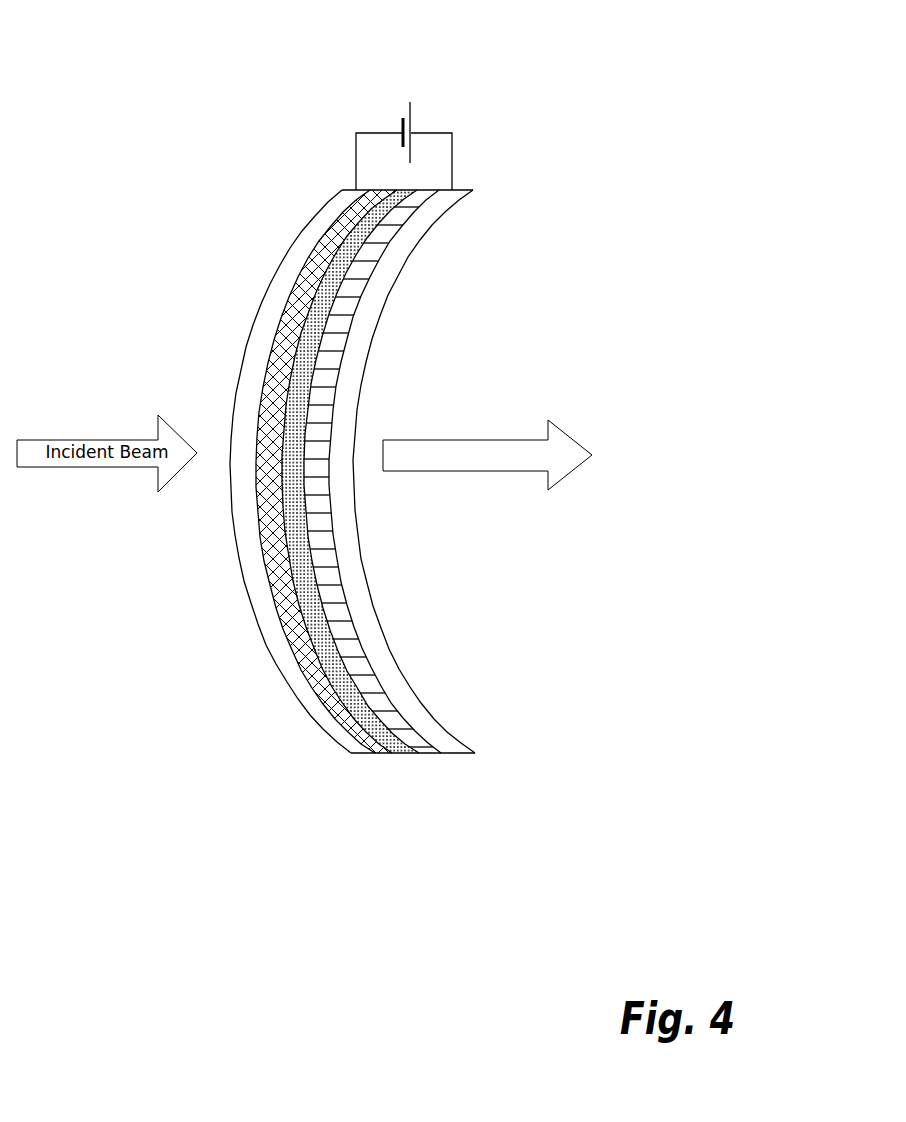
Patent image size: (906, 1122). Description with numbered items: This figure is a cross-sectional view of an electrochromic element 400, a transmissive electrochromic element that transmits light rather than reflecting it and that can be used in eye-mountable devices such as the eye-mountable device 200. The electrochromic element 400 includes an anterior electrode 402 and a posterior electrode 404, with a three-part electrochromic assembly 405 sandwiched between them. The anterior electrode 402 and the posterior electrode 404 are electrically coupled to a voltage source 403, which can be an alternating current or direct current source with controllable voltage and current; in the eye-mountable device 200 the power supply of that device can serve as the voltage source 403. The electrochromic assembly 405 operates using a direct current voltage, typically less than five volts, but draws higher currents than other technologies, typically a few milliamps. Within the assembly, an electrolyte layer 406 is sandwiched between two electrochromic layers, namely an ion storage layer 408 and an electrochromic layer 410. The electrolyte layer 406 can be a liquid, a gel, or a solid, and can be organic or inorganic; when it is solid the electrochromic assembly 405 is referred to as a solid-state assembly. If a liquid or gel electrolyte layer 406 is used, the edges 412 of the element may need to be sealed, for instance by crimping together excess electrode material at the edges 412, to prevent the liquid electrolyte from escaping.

The electrochromic element 400 is at (721, 204).
The anterior electrode 402 is at (347, 200).
The voltage source 403 is at (400, 88).
The posterior electrode 404 is at (413, 243).
The three-part electrochromic assembly 405 is at (360, 612).
The electrolyte layer 406 is at (288, 495).
The ion storage layer 408 is at (283, 316).
The electrochromic layer 410 is at (385, 703).
The edges 412 is at (469, 184).
The eye-mountable device 200 is at (506, 417).